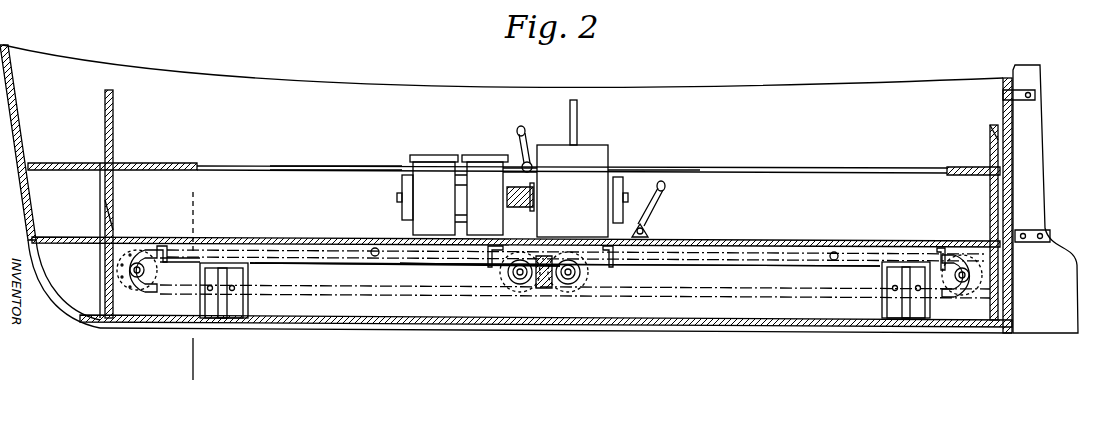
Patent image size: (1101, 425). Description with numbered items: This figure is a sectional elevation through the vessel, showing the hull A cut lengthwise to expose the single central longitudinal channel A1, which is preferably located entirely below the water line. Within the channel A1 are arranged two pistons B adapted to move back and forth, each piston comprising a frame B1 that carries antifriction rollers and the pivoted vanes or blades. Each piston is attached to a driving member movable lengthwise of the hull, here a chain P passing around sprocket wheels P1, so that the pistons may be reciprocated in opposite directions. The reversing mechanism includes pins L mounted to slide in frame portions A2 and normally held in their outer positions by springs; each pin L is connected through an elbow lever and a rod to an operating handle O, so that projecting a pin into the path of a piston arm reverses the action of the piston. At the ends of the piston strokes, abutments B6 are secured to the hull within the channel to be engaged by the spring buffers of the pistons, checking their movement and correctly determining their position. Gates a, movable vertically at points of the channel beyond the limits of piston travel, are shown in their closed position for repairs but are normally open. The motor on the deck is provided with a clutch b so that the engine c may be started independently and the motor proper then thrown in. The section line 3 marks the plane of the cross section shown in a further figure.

The hull A is at (539, 189).
The central longitudinal channel A1 is at (405, 289).
The frame portions A2 is at (453, 255).
The piston B is at (248, 300).
The frame B1 is at (200, 307).
The abutments B6 is at (173, 248).
The chain P is at (410, 293).
The sprocket wheels P1 is at (140, 295).
The pins L is at (375, 245).
The gates a is at (112, 215).
The clutch b is at (513, 163).
The engine c is at (389, 195).
The handle O is at (657, 206).
The section line 3- 3 is at (183, 287).